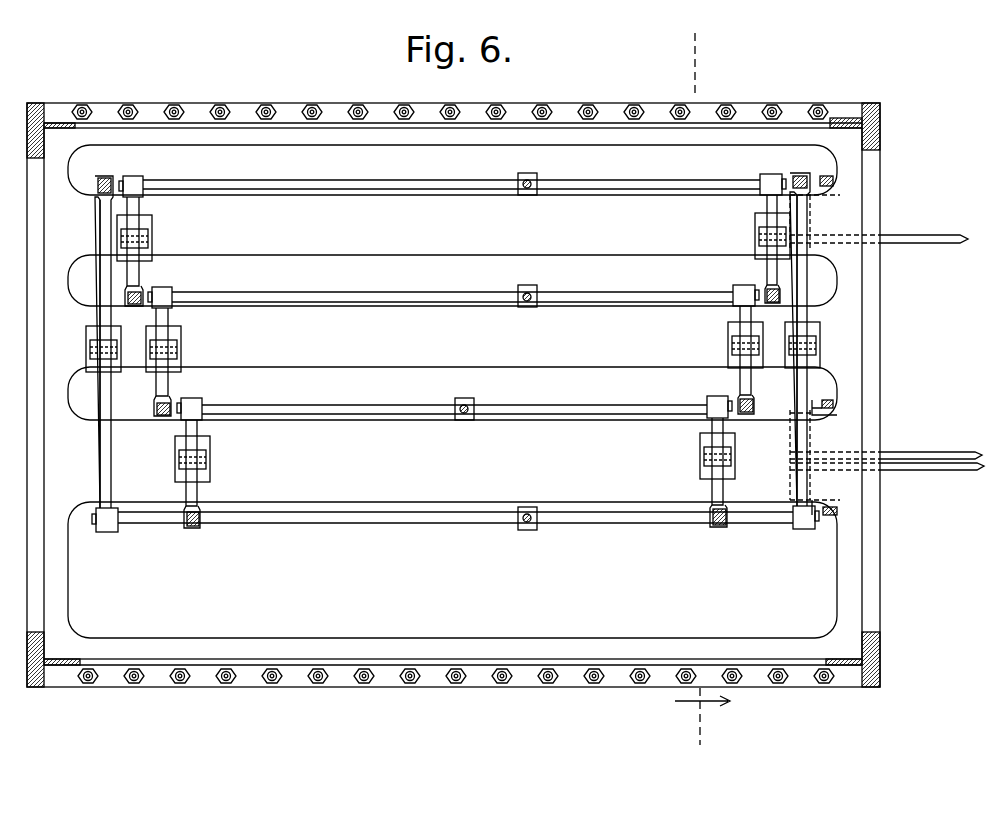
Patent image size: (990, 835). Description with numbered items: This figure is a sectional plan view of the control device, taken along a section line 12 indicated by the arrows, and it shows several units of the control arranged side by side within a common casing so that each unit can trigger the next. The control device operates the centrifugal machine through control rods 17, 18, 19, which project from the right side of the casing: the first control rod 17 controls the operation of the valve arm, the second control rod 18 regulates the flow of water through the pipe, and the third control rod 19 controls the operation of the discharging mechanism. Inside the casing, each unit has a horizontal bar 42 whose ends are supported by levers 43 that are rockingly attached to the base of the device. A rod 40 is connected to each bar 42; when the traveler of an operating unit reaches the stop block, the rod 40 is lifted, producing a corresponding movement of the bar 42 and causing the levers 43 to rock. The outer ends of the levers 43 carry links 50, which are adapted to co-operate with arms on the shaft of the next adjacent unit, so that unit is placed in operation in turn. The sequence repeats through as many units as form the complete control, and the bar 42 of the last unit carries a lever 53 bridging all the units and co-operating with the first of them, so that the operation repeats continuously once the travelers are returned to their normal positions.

The section line 12 is at (702, 393).
The control rod 17 is at (957, 244).
The control rod 18 is at (944, 452).
The control rod 19 is at (965, 471).
The rod 40 is at (525, 195).
The bar 42 is at (340, 191).
The lever 43 is at (133, 212).
The link 50 is at (138, 306).
The lever 53 is at (102, 477).